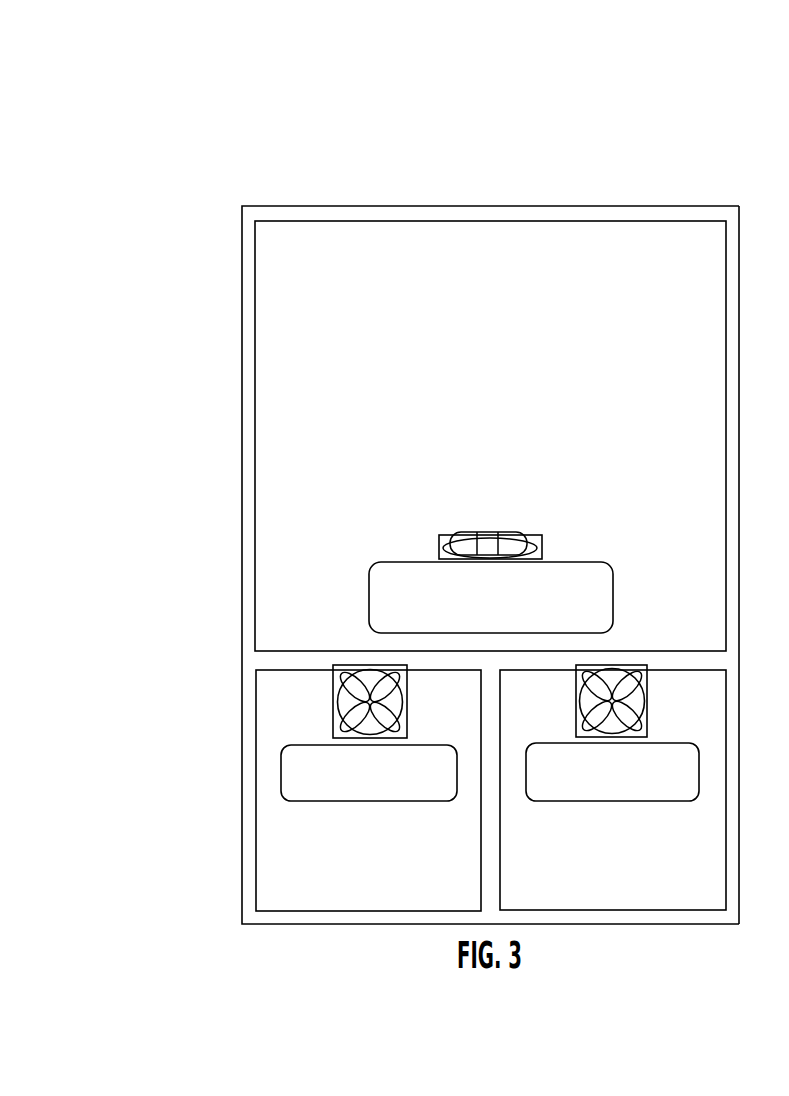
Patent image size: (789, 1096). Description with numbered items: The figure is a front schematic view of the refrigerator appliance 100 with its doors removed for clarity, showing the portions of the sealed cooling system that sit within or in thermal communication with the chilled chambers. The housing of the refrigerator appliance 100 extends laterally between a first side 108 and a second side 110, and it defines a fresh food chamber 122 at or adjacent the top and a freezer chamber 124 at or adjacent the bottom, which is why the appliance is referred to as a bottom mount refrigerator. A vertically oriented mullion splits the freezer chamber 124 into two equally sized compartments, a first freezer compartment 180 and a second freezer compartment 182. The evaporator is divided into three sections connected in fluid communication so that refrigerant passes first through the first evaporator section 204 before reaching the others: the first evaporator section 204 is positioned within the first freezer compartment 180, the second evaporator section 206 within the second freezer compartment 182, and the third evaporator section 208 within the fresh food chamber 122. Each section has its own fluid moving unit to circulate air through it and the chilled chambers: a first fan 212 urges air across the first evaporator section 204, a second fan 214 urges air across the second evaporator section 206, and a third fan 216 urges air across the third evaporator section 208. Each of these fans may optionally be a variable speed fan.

The refrigerator appliance 100 is at (273, 153).
The first side 108 is at (221, 366).
The second side 110 is at (748, 445).
The fresh food chamber 122 is at (188, 205).
The freezer chamber 124 is at (197, 668).
The first freezer compartment 180 is at (398, 892).
The second freezer compartment 182 is at (641, 893).
The first evaporator section 204 is at (370, 789).
The second evaporator section 206 is at (606, 789).
The third evaporator section 208 is at (598, 600).
The first fan 212 is at (407, 699).
The second fan 214 is at (648, 700).
The third fan 216 is at (522, 537).